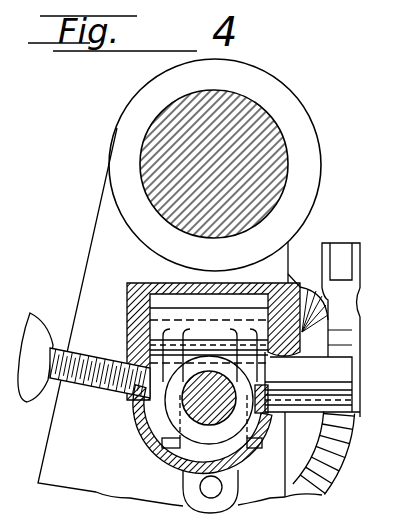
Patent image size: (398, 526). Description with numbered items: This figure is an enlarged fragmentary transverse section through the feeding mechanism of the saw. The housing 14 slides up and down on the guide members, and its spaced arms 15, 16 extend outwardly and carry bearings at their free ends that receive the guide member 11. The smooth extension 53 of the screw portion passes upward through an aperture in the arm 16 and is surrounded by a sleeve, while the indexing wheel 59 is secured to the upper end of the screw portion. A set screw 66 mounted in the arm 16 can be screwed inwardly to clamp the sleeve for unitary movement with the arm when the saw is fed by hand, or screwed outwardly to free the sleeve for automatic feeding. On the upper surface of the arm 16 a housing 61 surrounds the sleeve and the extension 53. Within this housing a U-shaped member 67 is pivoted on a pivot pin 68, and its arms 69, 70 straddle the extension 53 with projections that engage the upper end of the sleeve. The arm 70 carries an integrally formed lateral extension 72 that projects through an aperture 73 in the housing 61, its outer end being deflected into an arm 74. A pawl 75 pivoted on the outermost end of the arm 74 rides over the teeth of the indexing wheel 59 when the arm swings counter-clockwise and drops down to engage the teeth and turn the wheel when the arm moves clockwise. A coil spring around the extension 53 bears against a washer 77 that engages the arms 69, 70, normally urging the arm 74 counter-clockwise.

The guide member 11 is at (263, 137).
The housing 14 is at (253, 165).
The arm 15 is at (43, 498).
The arm 16 is at (95, 288).
The extension 53 is at (198, 425).
The indexing wheel 59 is at (338, 438).
The housing 61 is at (132, 283).
The set screw 66 is at (38, 330).
The U-shaped member 67 is at (288, 275).
The pivot pin 68 is at (350, 309).
The arm 69 is at (143, 431).
The arm 70 is at (286, 437).
The lateral extension 72 is at (312, 375).
The aperture 73 is at (332, 324).
The arm 74 is at (338, 348).
The pawl 75 is at (341, 257).
The washer 77 is at (213, 437).